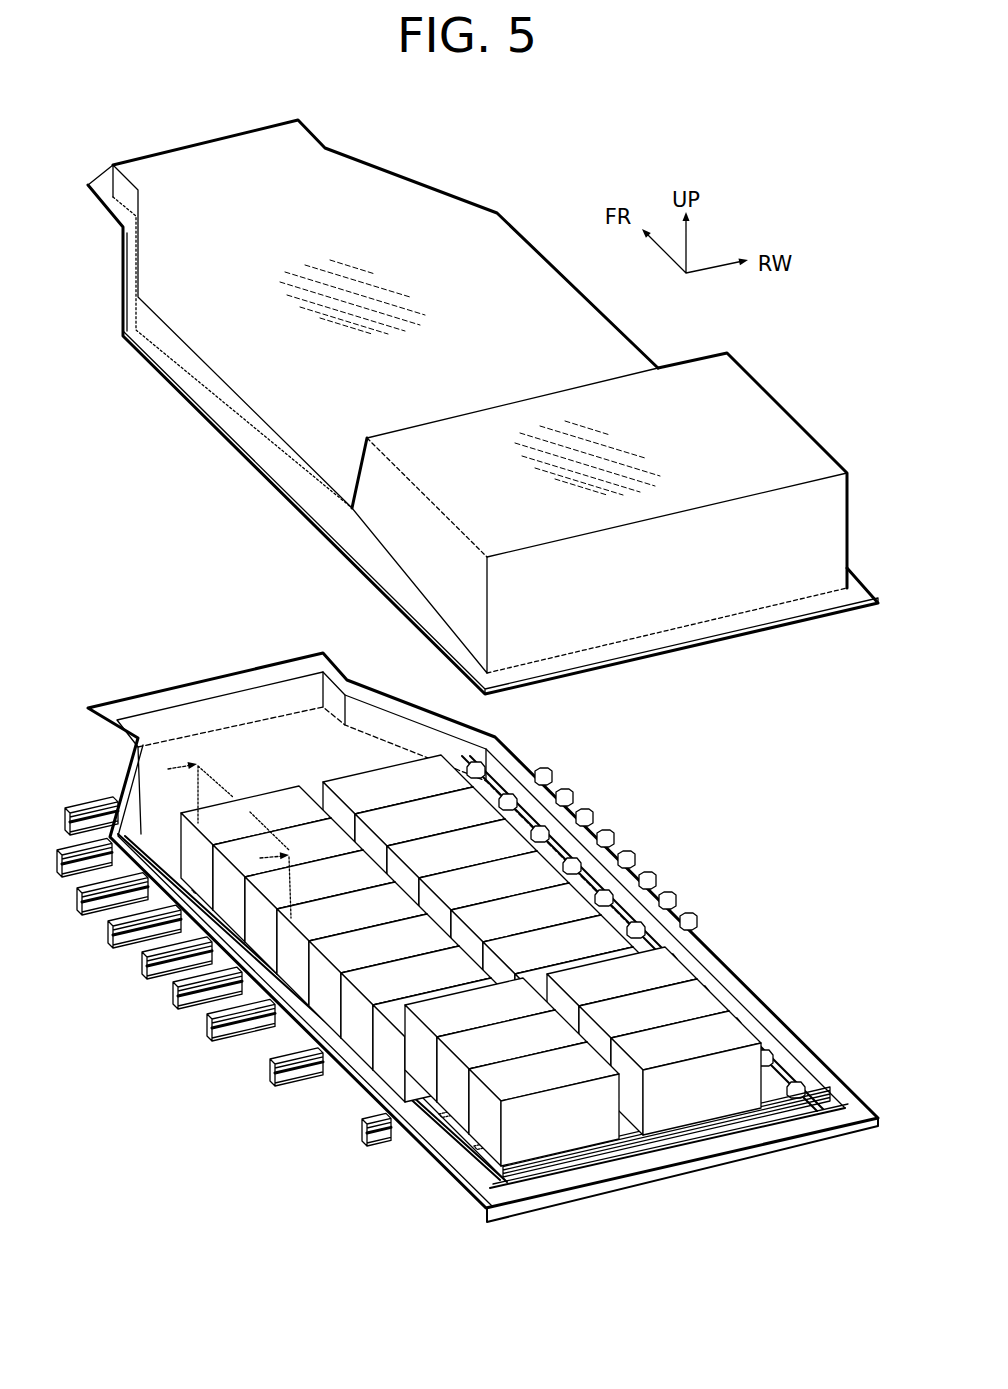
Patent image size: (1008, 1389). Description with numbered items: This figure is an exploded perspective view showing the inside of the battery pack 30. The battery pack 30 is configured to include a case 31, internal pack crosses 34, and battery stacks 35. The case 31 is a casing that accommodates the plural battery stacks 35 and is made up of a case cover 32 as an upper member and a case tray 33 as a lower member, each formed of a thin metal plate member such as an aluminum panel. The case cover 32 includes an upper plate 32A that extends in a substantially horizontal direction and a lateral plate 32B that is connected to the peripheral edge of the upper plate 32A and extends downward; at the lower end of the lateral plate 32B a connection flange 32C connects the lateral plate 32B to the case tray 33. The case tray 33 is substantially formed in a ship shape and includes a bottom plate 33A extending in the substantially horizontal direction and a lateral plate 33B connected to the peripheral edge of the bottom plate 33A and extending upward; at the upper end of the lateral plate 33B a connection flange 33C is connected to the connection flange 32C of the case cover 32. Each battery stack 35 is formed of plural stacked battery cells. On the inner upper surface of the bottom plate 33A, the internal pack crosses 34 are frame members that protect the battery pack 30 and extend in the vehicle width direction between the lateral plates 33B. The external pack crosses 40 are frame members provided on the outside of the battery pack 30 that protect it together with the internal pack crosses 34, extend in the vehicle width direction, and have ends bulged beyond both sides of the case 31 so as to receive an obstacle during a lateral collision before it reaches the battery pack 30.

The battery pack 30 is at (681, 797).
The case 31 is at (483, 666).
The case cover 32 is at (384, 163).
The upper plate 32A is at (280, 397).
The lateral plate 32B is at (722, 575).
The connection flange 32C is at (676, 628).
The case tray 33 is at (745, 985).
The bottom plate 33A is at (368, 752).
The lateral plate 33B is at (287, 688).
The connection flange 33C is at (213, 682).
The internal pack cross 34 is at (710, 1133).
The battery stack 35 is at (475, 803).
The external pack cross 40 is at (84, 806).